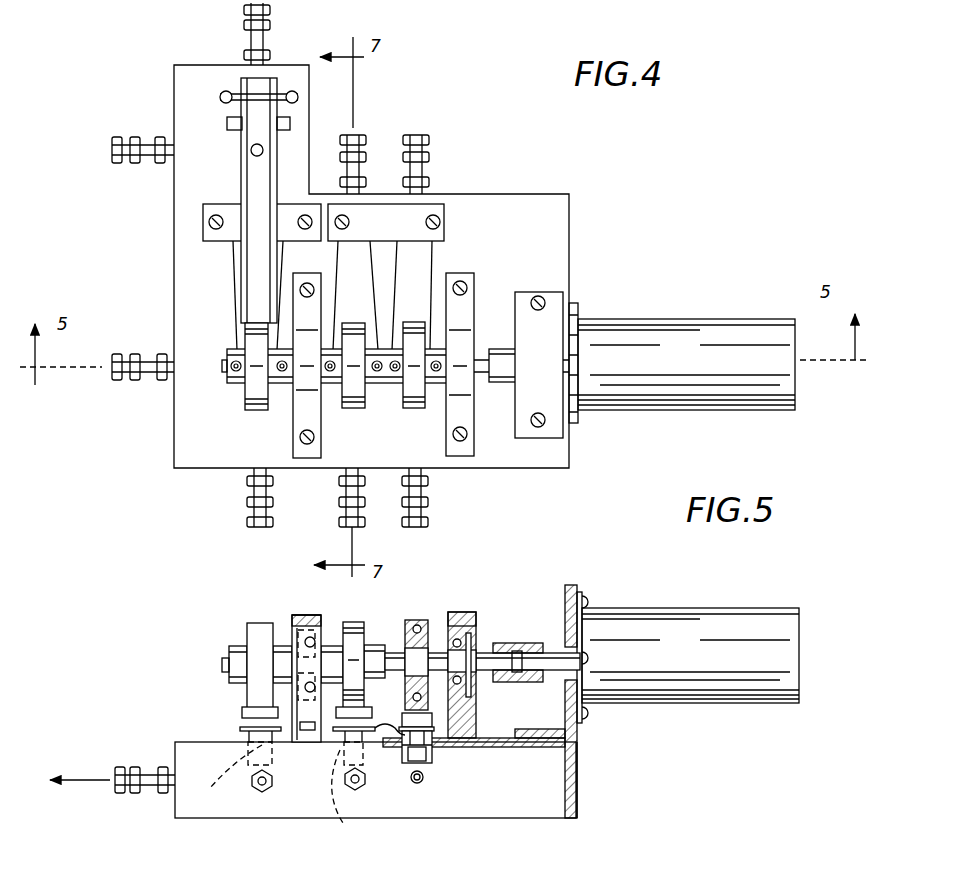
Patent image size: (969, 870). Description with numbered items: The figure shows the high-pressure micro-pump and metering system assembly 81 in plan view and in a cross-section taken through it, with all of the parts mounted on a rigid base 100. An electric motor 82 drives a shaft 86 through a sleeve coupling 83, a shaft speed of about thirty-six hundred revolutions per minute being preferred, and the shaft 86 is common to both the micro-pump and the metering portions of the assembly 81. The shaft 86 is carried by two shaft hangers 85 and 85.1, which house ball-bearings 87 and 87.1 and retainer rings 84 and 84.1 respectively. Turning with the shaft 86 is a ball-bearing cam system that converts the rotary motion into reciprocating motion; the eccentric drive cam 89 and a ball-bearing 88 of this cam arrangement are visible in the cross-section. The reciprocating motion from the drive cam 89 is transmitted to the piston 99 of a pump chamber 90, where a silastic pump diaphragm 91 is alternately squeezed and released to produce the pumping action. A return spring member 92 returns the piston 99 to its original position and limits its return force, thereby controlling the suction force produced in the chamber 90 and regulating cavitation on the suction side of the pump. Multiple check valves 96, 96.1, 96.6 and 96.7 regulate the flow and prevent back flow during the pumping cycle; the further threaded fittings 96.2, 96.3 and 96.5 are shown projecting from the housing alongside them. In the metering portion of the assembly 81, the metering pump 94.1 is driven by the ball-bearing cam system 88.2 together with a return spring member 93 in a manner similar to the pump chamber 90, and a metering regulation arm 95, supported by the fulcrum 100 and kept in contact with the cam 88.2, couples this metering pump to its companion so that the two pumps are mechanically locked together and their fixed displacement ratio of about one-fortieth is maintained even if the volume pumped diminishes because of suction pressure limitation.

In FIG. 4, the high-pressure micro-pump and metering system assembly 81 is at (516, 193).
In FIG. 5, the high-pressure micro-pump and metering system assembly 81 is at (310, 799).
In FIG. 4, the electric motor 82 is at (734, 366).
In FIG. 5, the electric motor 82 is at (698, 672).
In FIG. 4, the sleeve coupling 83 is at (506, 350).
In FIG. 5, the sleeve coupling 83 is at (497, 644).
In FIG. 5, the retainer ring 84 is at (477, 622).
In FIG. 5, the retainer ring 84.1 is at (290, 618).
In FIG. 4, the shaft hanger 85 is at (469, 300).
In FIG. 5, the shaft hanger 85 is at (460, 612).
In FIG. 4, the shaft hanger 85.1 is at (300, 393).
In FIG. 5, the shaft hanger 85.1 is at (317, 630).
In FIG. 4, the shaft 86 is at (554, 368).
In FIG. 5, the shaft 86 is at (222, 664).
In FIG. 5, the ball-bearing 87 is at (466, 638).
In FIG. 5, the ball-bearing 87.1 is at (296, 612).
In FIG. 4, the ball-bearing 88 is at (357, 409).
In FIG. 5, the ball-bearing 88 is at (347, 621).
In FIG. 4, the ball-bearing cam system 88.2 is at (255, 378).
In FIG. 5, the ball-bearing cam system 88.2 is at (250, 637).
In FIG. 4, the eccentric drive cam 89 is at (395, 372).
In FIG. 5, the eccentric drive cam 89 is at (400, 645).
In FIG. 5, the pump chamber 90 is at (405, 764).
In FIG. 5, the pump diaphragm 91 is at (432, 760).
In FIG. 4, the return spring member 92 is at (357, 276).
In FIG. 5, the return spring member 92 is at (388, 723).
In FIG. 4, the return spring member 93 is at (230, 273).
In FIG. 5, the return spring member 93 is at (242, 728).
In FIG. 5, the metering pump 94.1 is at (226, 778).
In FIG. 4, the metering regulation arm 95 is at (277, 108).
In FIG. 5, the metering regulation arm 95 is at (243, 712).
In FIG. 4, the check valve 96 is at (360, 522).
In FIG. 5, the check valve 96 is at (360, 790).
In FIG. 4, the check valve 96.1 is at (420, 492).
In FIG. 4, the adjusting bolt 96.2 is at (247, 523).
In FIG. 5, the adjusting bolt 96.2 is at (265, 790).
In FIG. 4, the adjusting bolt 96.3 is at (113, 372).
In FIG. 5, the adjusting bolt 96.3 is at (148, 790).
In FIG. 4, the adjusting bolt 96.5 is at (258, 40).
In FIG. 4, the check valve 96.6 is at (420, 136).
In FIG. 4, the check valve 96.7 is at (356, 136).
In FIG. 5, the piston 99 is at (422, 736).
In FIG. 4, the rigid base 100 is at (227, 123).
In FIG. 5, the rigid base 100 is at (580, 800).